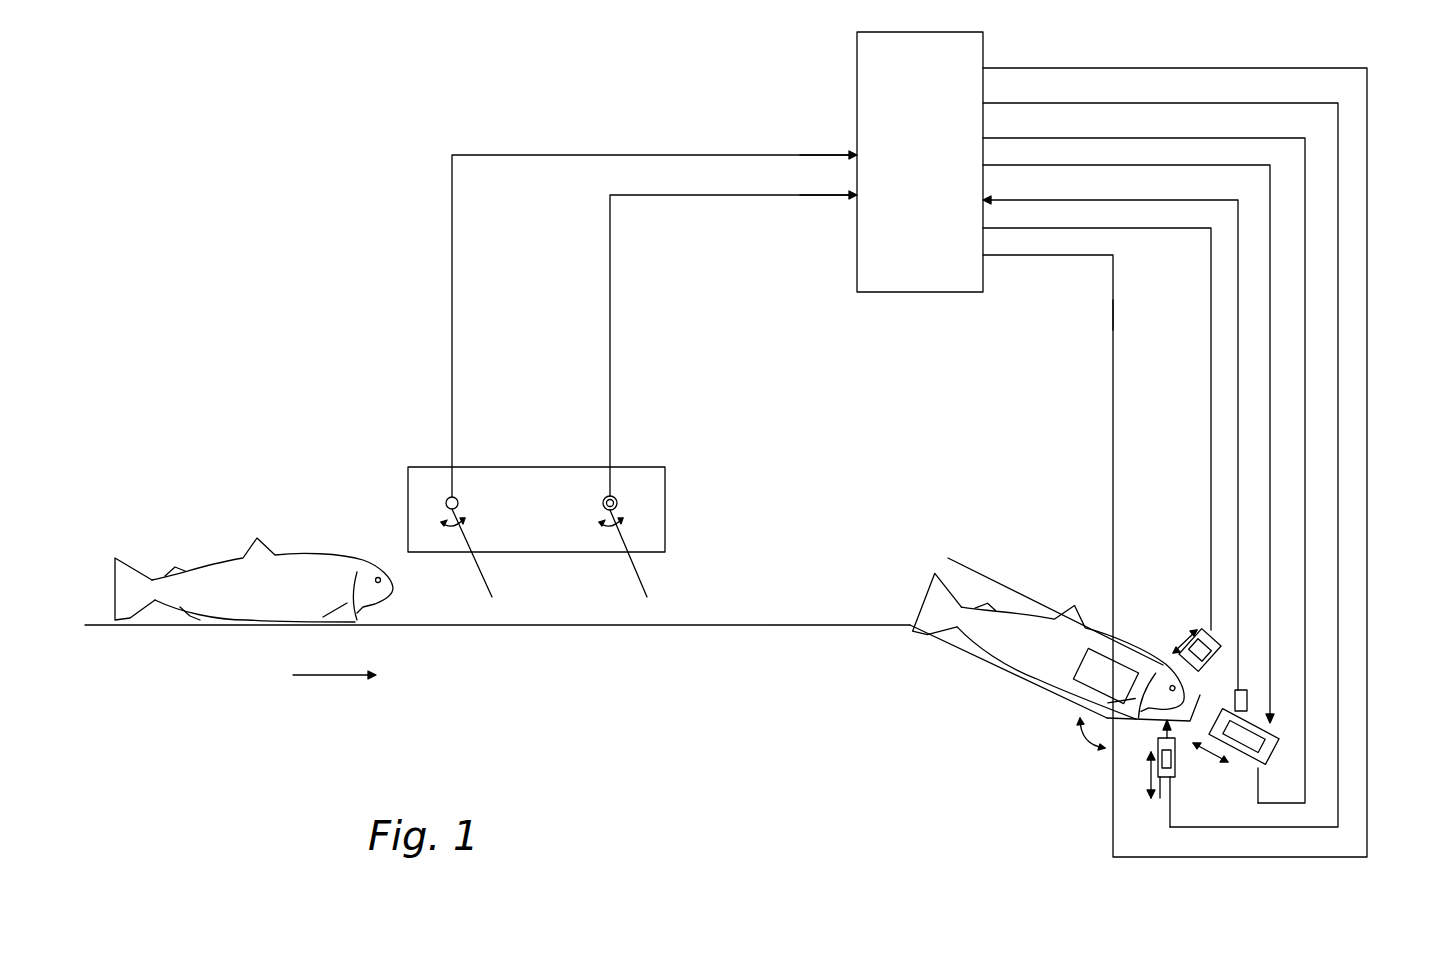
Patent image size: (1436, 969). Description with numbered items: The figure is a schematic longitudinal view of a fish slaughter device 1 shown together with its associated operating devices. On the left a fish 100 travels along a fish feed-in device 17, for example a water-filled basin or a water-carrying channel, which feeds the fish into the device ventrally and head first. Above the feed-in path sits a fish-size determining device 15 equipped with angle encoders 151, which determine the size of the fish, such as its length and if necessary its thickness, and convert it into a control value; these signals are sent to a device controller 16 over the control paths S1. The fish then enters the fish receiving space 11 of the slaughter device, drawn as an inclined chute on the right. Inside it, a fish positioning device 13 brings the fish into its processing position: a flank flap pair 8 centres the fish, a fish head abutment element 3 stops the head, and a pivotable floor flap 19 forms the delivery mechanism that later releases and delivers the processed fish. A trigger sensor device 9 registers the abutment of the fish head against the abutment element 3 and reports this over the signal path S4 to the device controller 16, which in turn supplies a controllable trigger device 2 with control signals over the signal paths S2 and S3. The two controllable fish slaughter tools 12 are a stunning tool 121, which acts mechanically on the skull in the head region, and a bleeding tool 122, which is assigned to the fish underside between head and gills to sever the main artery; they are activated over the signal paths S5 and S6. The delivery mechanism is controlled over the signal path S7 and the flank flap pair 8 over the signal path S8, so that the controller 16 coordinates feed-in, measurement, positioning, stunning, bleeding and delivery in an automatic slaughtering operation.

The fish slaughter device 1 is at (950, 523).
The controllable trigger device 2 is at (1245, 763).
The fish head abutment element 3 is at (1185, 743).
The flank flap pair 8 is at (1075, 690).
The trigger sensor device 9 is at (1247, 700).
The fish receiving space 11 is at (945, 642).
The fish slaughter tools 12 is at (1169, 735).
The stunning tool 121 is at (1200, 630).
The bleeding tool 122 is at (1162, 792).
The fish positioning device 13 is at (1137, 635).
The fish-size determining device 15 is at (428, 467).
The angle encoders 151 is at (458, 497).
The device controller 16 is at (857, 68).
The fish feed-in device 17 is at (678, 626).
The pivotable floor flap 19 is at (1147, 723).
The fish 100 is at (222, 562).
The control paths S1 is at (824, 176).
The signal path S2 is at (1270, 348).
The signal path S3 is at (1305, 370).
The signal path S4 is at (1023, 200).
The signal path S5 is at (1155, 228).
The signal path S6 is at (1338, 195).
The signal path S7 is at (1065, 68).
The signal path S8 is at (1113, 325).